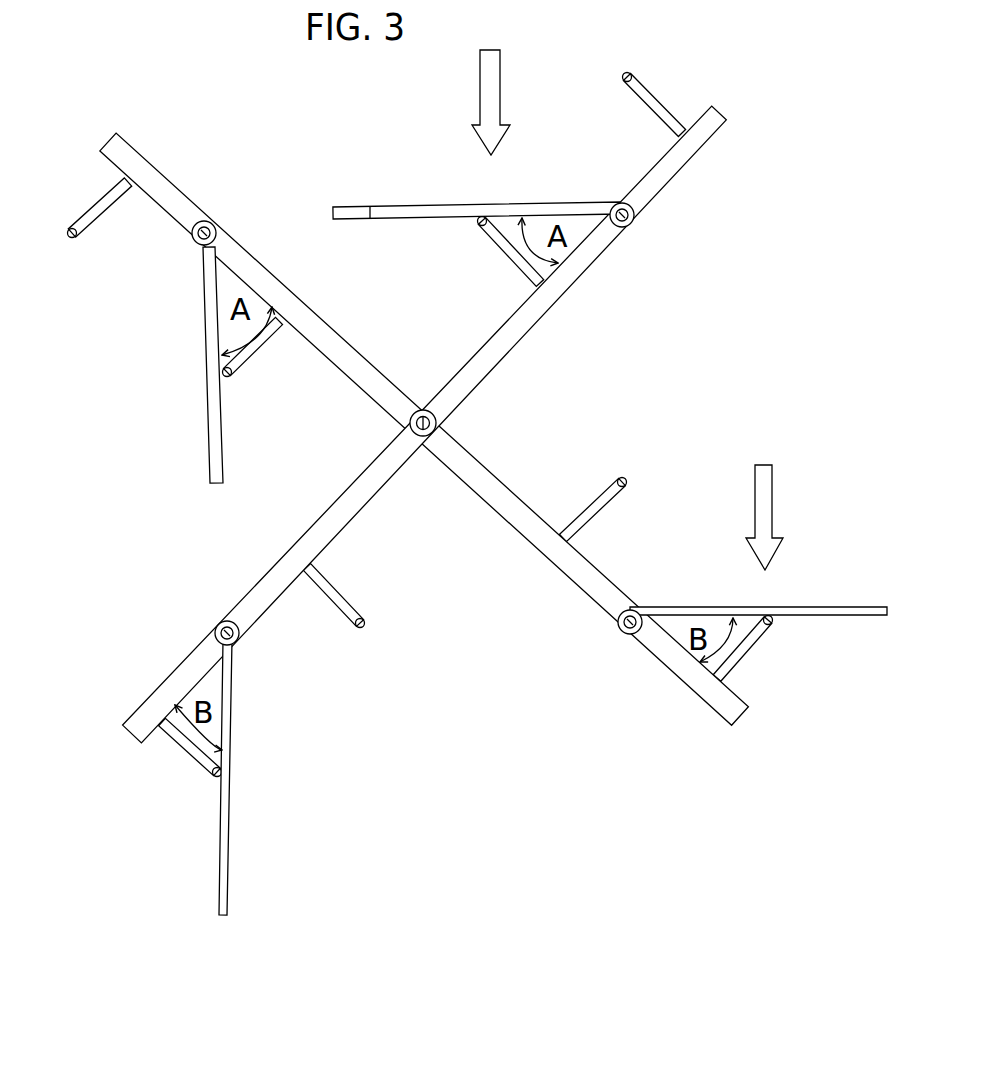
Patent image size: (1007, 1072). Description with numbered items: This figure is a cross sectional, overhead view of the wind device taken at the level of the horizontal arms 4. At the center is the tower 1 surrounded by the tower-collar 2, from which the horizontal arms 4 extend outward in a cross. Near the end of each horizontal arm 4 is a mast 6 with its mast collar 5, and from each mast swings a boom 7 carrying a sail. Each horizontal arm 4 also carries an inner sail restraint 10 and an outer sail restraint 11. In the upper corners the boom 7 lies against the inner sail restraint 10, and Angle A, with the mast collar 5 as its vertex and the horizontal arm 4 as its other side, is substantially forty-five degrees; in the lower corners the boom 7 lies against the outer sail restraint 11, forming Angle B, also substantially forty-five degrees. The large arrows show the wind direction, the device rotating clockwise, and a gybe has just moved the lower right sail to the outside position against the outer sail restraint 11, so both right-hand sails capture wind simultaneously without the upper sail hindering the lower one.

The tower 1 is at (423, 410).
The tower-collar 2 is at (424, 440).
The horizontal arms 4 is at (173, 180).
The mast collar 5 is at (200, 245).
The masts 6 is at (213, 225).
The boom 7 is at (222, 413).
The inner sail restraint 10 is at (268, 343).
The outer sail restraint 11 is at (97, 200).